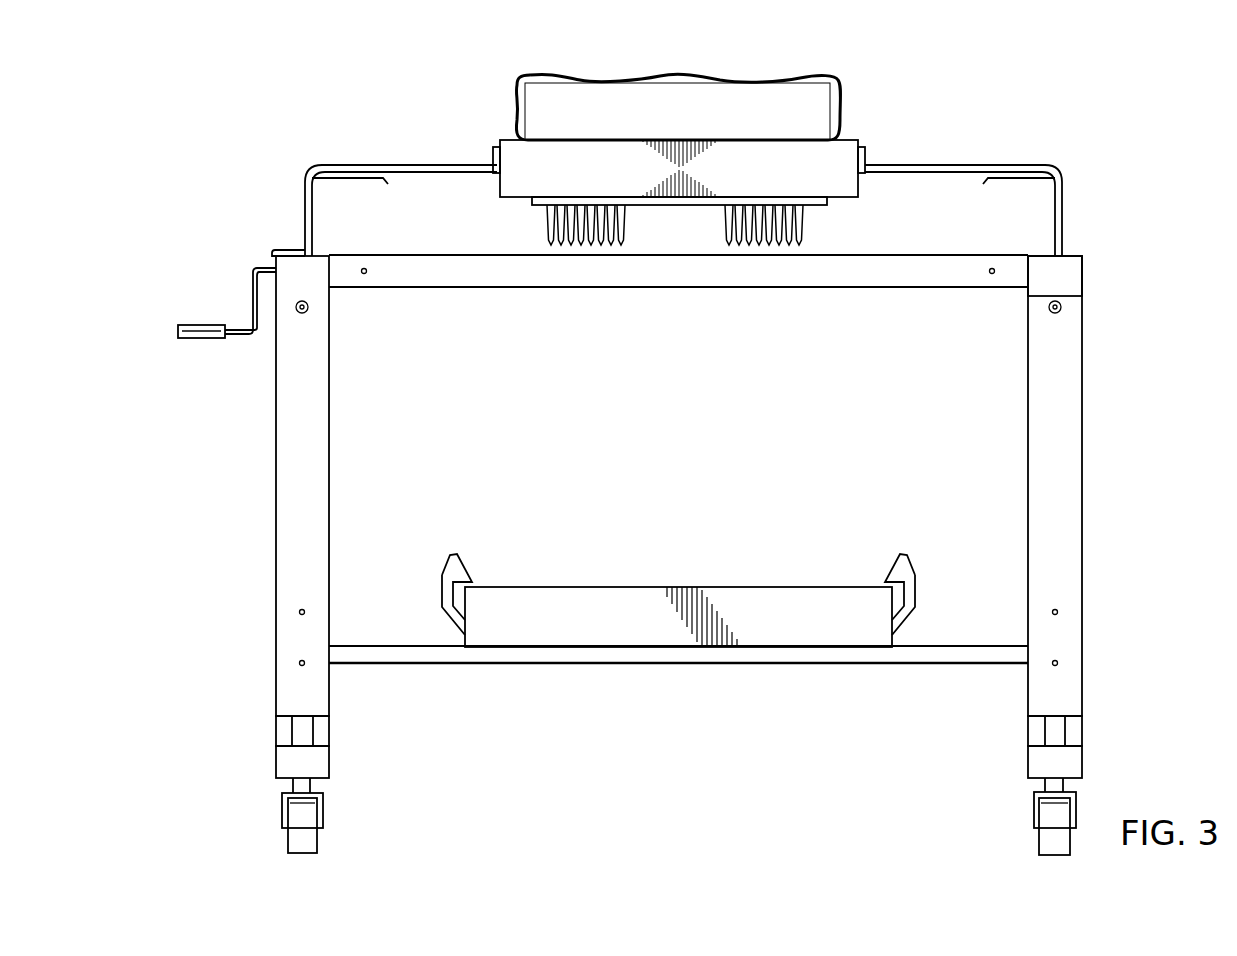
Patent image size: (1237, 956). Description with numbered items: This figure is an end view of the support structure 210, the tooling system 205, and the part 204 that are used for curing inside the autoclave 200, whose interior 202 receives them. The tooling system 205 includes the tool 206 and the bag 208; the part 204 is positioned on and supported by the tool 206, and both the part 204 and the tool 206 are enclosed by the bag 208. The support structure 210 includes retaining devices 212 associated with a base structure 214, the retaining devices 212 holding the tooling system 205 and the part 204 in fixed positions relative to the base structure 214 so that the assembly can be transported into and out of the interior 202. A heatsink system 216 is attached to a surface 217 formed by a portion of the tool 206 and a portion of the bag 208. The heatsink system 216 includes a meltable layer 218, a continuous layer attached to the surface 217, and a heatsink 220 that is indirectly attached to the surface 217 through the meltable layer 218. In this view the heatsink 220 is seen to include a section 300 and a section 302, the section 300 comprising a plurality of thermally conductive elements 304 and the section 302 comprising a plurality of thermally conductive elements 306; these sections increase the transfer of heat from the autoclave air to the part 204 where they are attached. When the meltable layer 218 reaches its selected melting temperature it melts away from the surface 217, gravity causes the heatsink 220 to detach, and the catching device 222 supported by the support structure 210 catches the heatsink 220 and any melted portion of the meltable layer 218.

The autoclave 200 is at (367, 62).
The interior 202 is at (858, 118).
The part 204 is at (696, 93).
The tooling system 205 is at (882, 203).
The tool 206 is at (590, 150).
The bag 208 is at (840, 83).
The support structure 210 is at (1085, 270).
The retaining devices 212 is at (1080, 230).
The base structure 214 is at (1083, 487).
The heatsink system 216 is at (500, 222).
The surface 217 is at (512, 90).
The meltable layer 218 is at (810, 205).
The heatsink 220 is at (633, 220).
The catching device 222 is at (572, 585).
The section 300 is at (575, 257).
The section 302 is at (752, 257).
The plurality of thermally conductive elements 304 is at (615, 257).
The plurality of thermally conductive elements 306 is at (793, 257).